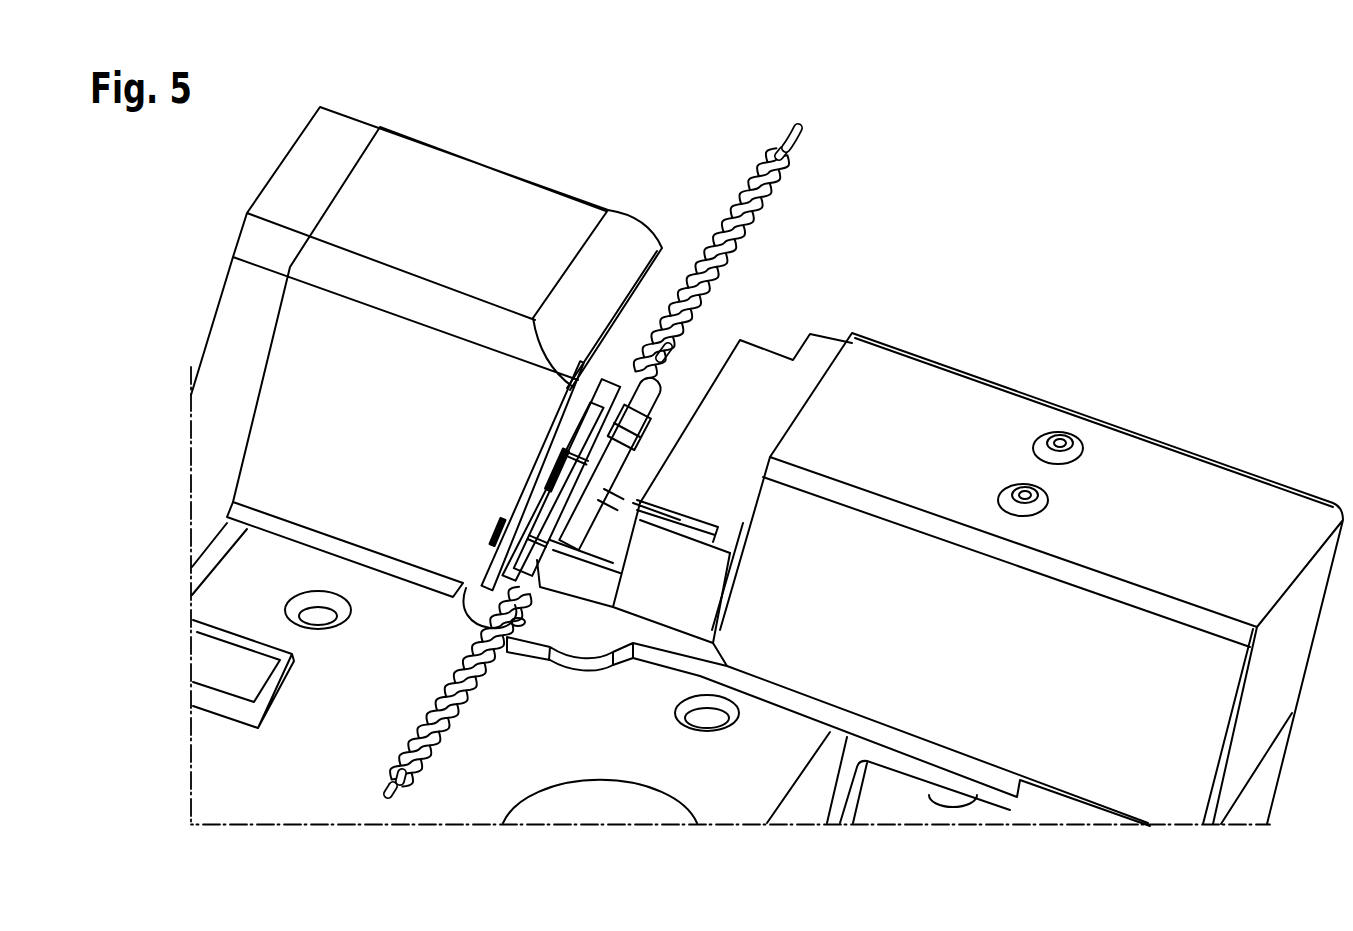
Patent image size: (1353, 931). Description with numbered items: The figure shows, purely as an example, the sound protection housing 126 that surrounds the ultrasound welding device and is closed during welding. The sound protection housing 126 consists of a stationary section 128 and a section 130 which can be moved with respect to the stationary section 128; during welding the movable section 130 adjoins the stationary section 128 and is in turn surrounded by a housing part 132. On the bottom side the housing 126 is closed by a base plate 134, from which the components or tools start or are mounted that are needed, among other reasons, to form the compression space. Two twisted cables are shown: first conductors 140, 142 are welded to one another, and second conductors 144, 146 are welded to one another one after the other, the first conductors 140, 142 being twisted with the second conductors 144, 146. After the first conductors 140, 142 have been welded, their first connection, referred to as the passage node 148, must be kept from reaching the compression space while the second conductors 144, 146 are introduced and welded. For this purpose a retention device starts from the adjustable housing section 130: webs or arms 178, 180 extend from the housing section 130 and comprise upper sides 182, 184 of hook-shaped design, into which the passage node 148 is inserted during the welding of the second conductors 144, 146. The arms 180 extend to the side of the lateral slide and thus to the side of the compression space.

The sound protection housing 126 is at (972, 118).
The stationary section 128 is at (500, 200).
The movable housing section 130 is at (818, 350).
The housing part 132 is at (983, 404).
The base plate 134 is at (567, 630).
The first conductor 140 is at (383, 797).
The first conductor 142 is at (785, 142).
The second conductor 144 is at (405, 773).
The second conductor 146 is at (800, 155).
The passage node 148 is at (518, 487).
The arm 178 is at (585, 423).
The arm 180 is at (655, 375).
The upper side 182 is at (660, 427).
The upper side 184 is at (605, 372).